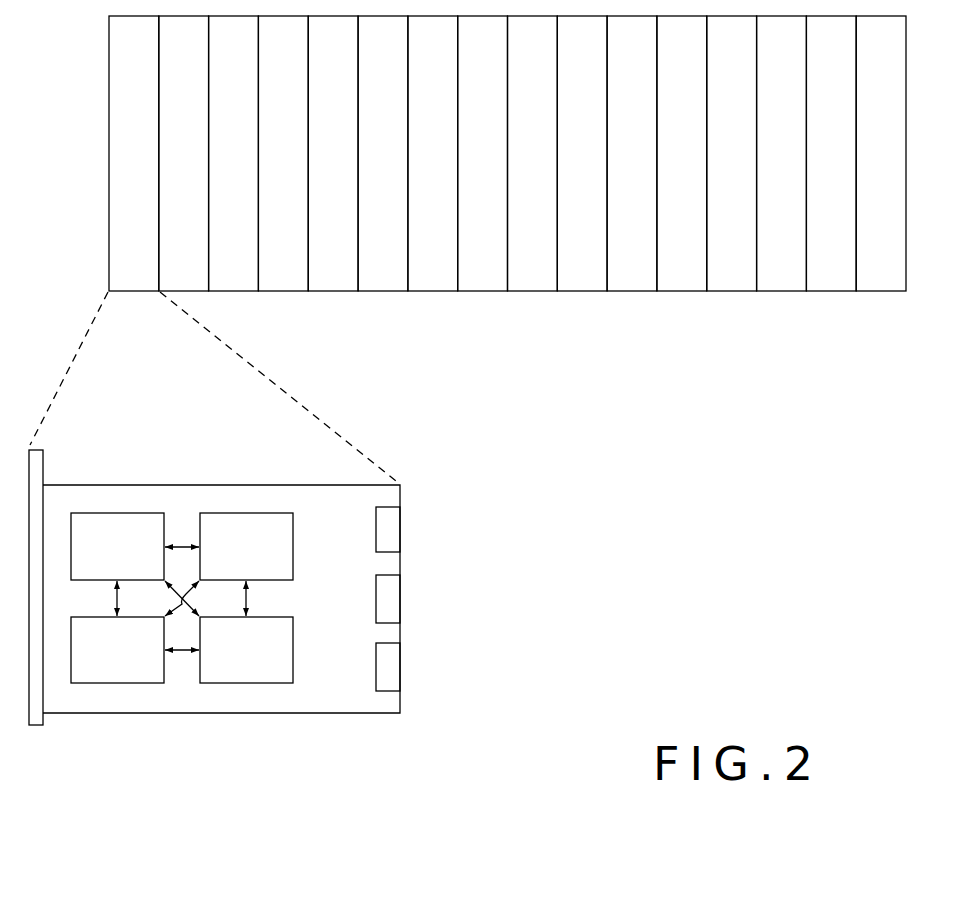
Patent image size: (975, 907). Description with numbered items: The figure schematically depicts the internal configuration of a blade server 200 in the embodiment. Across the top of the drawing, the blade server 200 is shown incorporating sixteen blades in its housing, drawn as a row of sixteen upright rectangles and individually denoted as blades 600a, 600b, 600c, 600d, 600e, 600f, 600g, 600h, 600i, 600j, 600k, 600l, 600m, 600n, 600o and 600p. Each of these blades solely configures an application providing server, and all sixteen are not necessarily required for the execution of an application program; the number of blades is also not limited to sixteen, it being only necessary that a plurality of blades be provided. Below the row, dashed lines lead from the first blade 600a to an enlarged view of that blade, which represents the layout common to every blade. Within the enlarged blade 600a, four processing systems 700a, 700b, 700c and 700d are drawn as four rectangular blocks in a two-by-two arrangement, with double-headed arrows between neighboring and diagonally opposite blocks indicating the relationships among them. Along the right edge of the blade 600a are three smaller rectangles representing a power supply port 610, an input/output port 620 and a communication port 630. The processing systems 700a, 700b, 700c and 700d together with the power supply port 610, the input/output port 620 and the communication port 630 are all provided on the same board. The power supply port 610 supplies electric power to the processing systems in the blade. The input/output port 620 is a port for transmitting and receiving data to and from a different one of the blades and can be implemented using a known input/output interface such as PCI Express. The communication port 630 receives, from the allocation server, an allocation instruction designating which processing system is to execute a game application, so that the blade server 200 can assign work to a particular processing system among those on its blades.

The blade server 200 is at (483, 846).
The blade 600a is at (428, 508).
The blade 600b is at (190, 178).
The blade 600c is at (240, 178).
The blade 600d is at (277, 178).
The blade 600e is at (327, 178).
The blade 600f is at (377, 178).
The blade 600g is at (439, 178).
The blade 600h is at (489, 178).
The blade 600i is at (538, 178).
The blade 600j is at (588, 178).
The blade 600k is at (626, 178).
The blade 600l is at (688, 178).
The blade 600m is at (723, 178).
The blade 600n is at (775, 178).
The blade 600o is at (838, 178).
The blade 600p is at (888, 178).
The processing system 700a is at (118, 512).
The processing system 700b is at (248, 512).
The processing system 700c is at (117, 684).
The processing system 700d is at (246, 684).
The power supply port 610 is at (392, 528).
The input/output port 620 is at (392, 598).
The communication port 630 is at (392, 668).